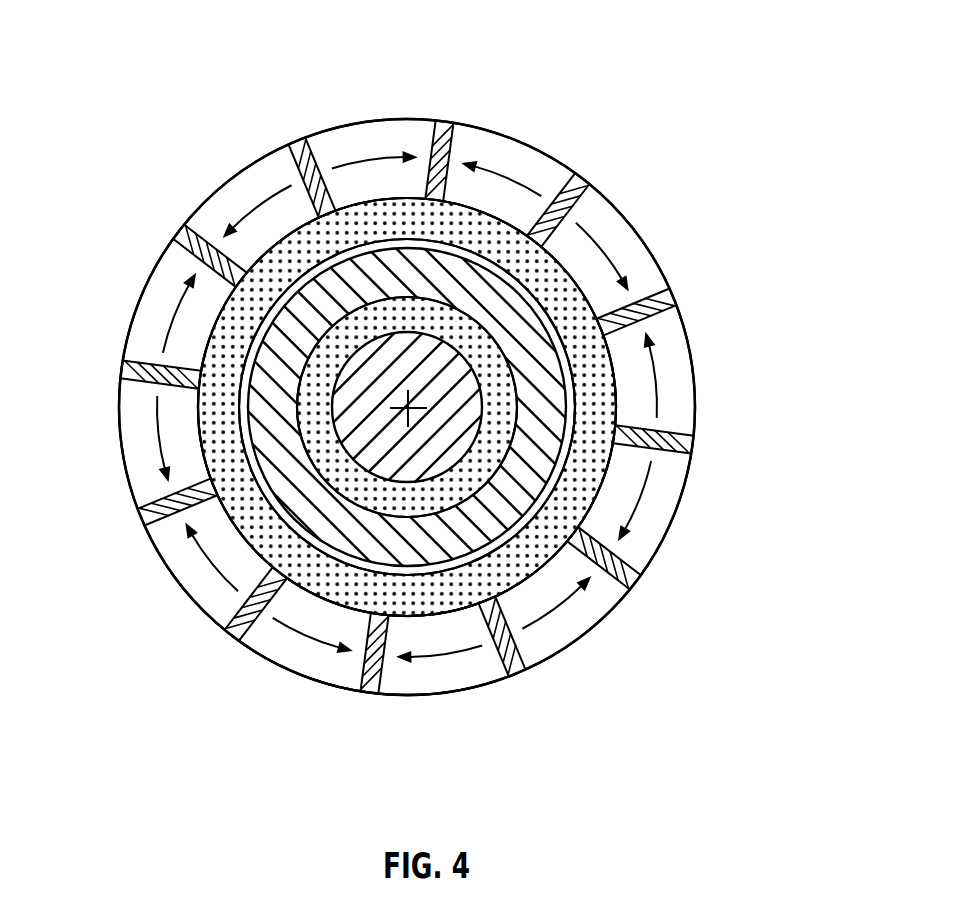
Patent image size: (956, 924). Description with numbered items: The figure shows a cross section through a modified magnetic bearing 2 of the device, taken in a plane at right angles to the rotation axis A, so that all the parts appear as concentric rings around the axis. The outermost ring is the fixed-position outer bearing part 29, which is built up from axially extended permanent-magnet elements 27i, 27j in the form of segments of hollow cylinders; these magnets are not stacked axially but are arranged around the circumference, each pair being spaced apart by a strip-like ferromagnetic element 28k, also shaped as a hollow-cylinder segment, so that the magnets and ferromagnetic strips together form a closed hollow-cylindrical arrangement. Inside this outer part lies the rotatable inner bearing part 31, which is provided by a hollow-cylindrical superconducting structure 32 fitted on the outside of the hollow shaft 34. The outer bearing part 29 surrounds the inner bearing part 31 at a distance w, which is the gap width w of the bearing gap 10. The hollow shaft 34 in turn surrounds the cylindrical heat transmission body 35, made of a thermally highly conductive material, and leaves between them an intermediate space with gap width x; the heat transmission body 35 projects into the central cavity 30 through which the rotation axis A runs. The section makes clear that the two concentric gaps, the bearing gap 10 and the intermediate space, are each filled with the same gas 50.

The magnetic bearing 2 is at (758, 768).
The bearing gap 10 is at (486, 234).
The permanent-magnet element 27i is at (297, 657).
The permanent-magnet element 27j is at (433, 675).
The ferromagnetic element 28k is at (511, 657).
The outer bearing part 29 is at (612, 613).
The central cavity 30 is at (238, 427).
The inner bearing part 31 is at (407, 407).
The superconducting structure 32 is at (539, 303).
The hollow shaft 34 is at (478, 475).
The heat transmission body 35 is at (443, 393).
The gas 50 is at (300, 248).
The rotation axis A is at (420, 413).
The gap width w is at (377, 232).
The gap width x is at (403, 493).